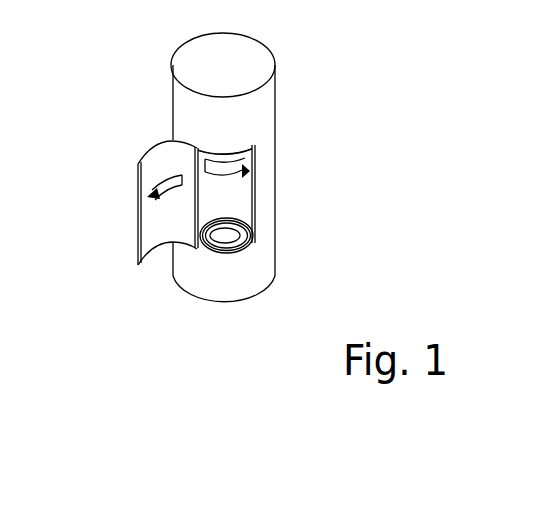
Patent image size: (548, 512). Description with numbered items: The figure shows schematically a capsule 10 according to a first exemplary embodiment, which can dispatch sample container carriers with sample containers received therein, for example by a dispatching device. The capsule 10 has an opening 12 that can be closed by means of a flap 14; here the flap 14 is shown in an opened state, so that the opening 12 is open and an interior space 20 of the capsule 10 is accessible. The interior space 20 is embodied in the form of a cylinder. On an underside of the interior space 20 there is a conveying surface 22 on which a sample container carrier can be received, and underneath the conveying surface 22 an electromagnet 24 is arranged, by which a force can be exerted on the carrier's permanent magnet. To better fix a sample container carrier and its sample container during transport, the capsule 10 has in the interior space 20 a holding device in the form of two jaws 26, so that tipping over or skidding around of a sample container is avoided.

The capsule 10 is at (263, 118).
The opening 12 is at (201, 148).
The flap 14 is at (150, 229).
The interior space 20 is at (235, 204).
The conveying surface 22 is at (256, 241).
The electromagnet 24 is at (235, 233).
The jaws 26 is at (150, 193).